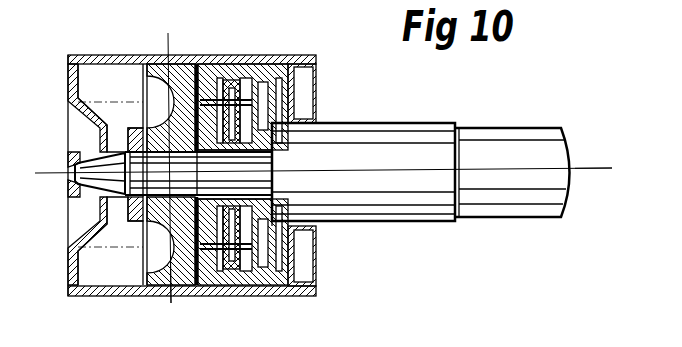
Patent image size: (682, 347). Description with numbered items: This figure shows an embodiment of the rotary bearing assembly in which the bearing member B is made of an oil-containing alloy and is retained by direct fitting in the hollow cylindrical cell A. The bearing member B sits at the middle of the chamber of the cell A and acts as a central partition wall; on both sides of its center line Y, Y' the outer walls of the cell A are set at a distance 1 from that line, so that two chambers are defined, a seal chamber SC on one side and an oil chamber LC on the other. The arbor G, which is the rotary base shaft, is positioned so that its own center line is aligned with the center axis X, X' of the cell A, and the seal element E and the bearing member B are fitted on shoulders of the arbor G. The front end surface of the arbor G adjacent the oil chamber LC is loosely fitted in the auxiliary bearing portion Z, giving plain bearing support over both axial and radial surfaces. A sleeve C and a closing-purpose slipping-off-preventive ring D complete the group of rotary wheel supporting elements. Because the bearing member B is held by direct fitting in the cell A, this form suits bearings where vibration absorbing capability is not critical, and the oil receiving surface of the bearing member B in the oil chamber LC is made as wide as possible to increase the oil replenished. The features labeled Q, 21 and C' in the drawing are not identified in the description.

The chamber Q is at (98, 83).
The cell A is at (129, 55).
The center line Y is at (170, 153).
The center line Y' is at (177, 297).
The seal chamber SC is at (223, 90).
The sleeve C is at (243, 78).
The spring housing body lower C' is at (243, 267).
The retaining member 21 is at (303, 82).
The seal element E is at (257, 118).
The arbor G is at (406, 124).
The center axis X is at (315, 170).
The center axis X' is at (605, 172).
The auxiliary bearing portion Z is at (90, 150).
The distance 1 is at (66, 188).
The oil chamber LC is at (104, 224).
The bearing member B is at (155, 280).
The closing-purpose slipping-off-preventive ring D is at (298, 262).